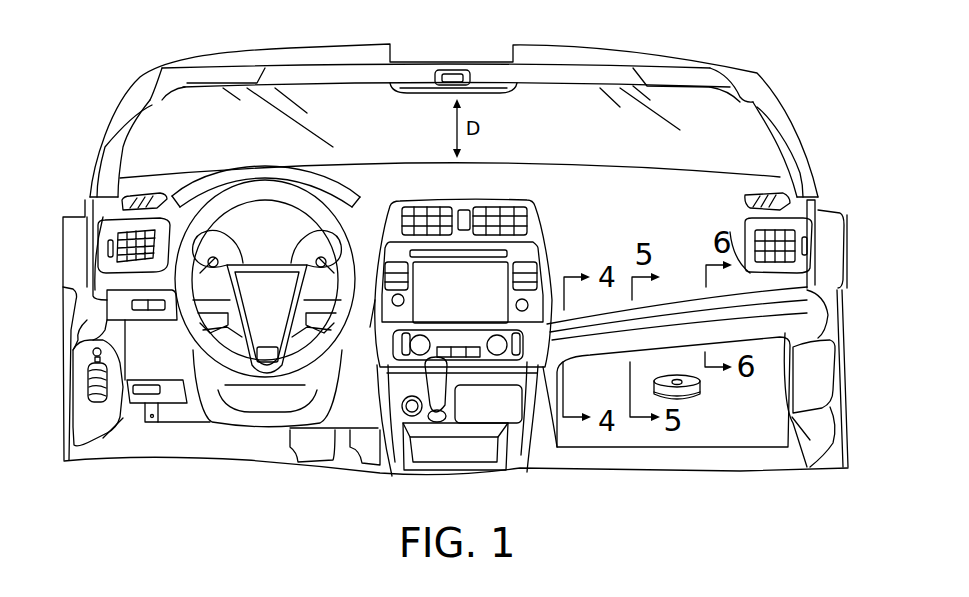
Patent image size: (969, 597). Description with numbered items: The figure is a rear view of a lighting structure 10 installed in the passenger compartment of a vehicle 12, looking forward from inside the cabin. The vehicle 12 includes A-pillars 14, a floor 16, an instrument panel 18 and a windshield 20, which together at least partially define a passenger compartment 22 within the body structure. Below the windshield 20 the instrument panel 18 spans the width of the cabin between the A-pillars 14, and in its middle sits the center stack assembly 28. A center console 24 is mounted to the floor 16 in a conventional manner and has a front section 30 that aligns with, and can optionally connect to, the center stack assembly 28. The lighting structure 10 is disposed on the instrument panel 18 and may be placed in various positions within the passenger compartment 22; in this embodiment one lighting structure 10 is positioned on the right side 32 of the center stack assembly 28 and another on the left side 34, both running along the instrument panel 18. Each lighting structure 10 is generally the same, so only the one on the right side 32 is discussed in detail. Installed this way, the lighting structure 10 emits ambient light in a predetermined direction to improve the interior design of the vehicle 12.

The lighting structure 10 is at (115, 300).
The vehicle 12 is at (824, 178).
The A-pillars 14 is at (112, 160).
The floor 16 is at (147, 440).
The instrument panel 18 is at (598, 190).
The windshield 20 is at (543, 116).
The passenger compartment 22 is at (656, 204).
The center console 24 is at (473, 448).
The center stack assembly 28 is at (540, 258).
The front section 30 is at (520, 423).
The right side 32 is at (540, 316).
The left side 34 is at (378, 370).